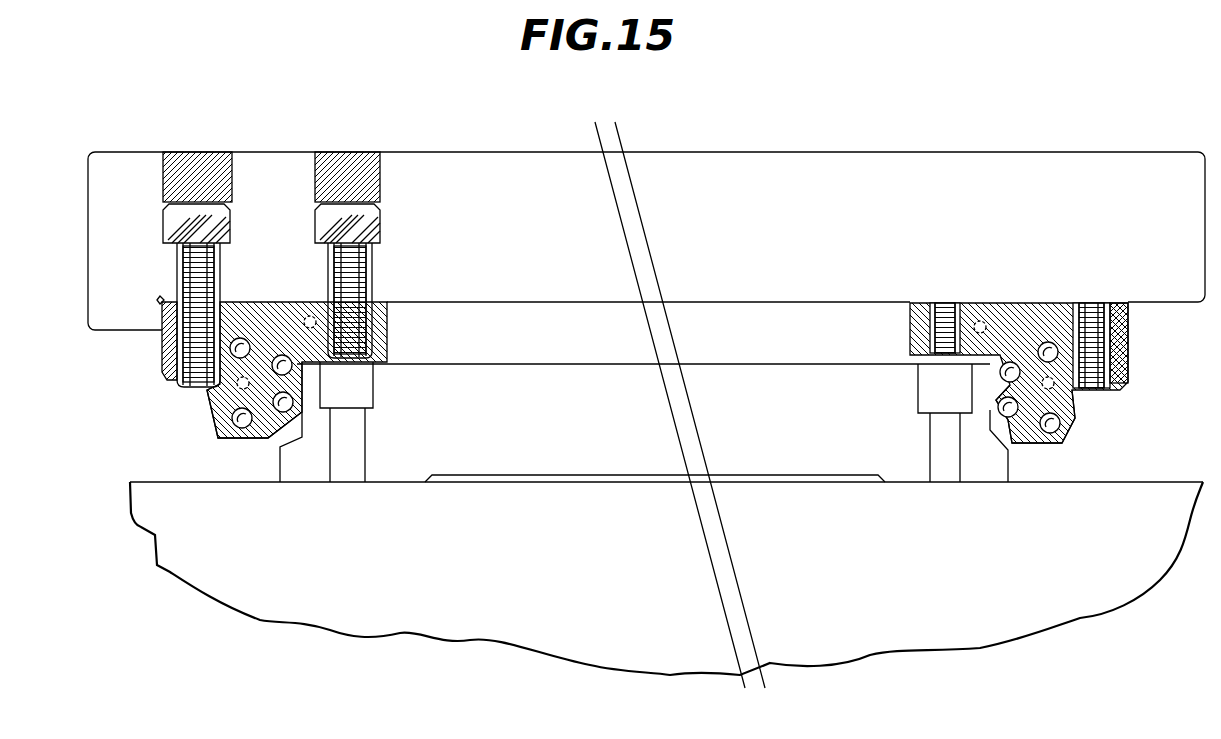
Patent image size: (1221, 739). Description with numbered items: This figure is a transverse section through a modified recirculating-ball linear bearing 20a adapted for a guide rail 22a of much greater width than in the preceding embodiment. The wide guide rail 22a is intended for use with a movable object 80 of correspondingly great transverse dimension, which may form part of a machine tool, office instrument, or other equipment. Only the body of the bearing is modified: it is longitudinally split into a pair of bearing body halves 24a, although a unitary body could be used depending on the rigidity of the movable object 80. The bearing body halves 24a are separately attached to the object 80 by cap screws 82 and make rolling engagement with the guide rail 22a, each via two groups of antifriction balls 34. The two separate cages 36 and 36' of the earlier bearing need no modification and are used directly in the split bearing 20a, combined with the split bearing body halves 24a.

The movable object 80 is at (833, 168).
The cap screws 82 is at (163, 226).
The antifriction balls 34 is at (282, 354).
The bearing body halves 24a is at (162, 316).
The recirculating-ball linear bearing 20a is at (155, 377).
The cage 36 is at (230, 400).
The cage 36' is at (1078, 414).
The guide rail 22a is at (855, 462).